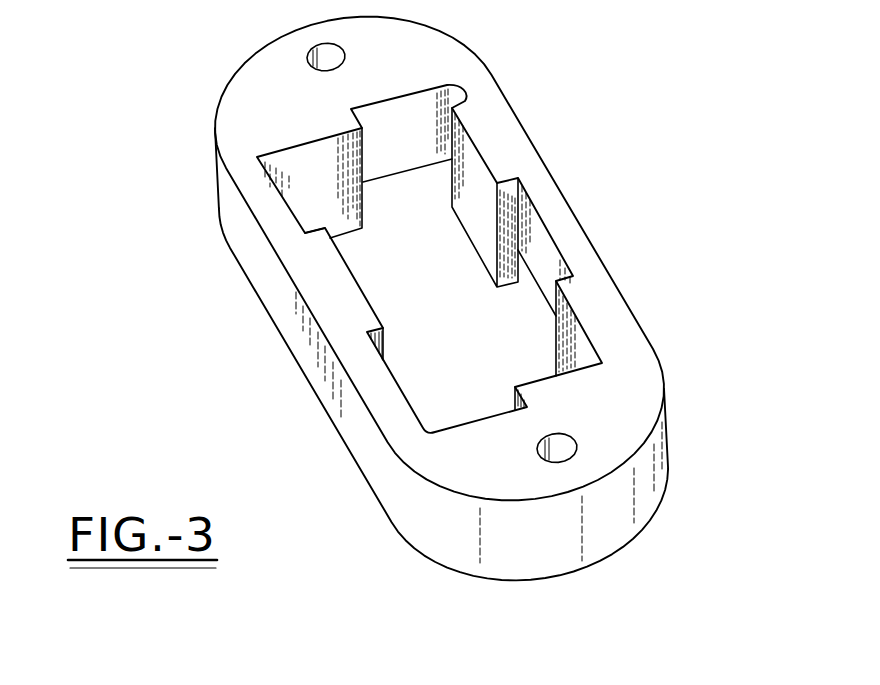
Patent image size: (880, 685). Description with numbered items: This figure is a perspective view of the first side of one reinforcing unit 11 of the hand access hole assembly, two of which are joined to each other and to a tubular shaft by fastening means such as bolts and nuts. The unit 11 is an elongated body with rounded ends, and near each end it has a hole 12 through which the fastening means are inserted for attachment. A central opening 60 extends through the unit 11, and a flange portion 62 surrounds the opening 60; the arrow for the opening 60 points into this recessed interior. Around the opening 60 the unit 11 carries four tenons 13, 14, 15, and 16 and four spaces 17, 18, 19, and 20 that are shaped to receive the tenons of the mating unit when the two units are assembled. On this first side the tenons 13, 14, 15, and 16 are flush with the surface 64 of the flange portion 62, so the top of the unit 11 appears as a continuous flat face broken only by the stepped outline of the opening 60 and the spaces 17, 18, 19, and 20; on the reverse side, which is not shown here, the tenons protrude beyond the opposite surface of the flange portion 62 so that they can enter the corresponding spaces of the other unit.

The reinforcing unit 11 is at (526, 87).
The holes 12 is at (316, 55).
The tenon 13 is at (368, 298).
The tenon 14 is at (300, 191).
The tenon 15 is at (468, 232).
The tenon 16 is at (538, 379).
The space 17 is at (537, 283).
The space 18 is at (405, 165).
The space 19 is at (328, 229).
The space 20 is at (475, 418).
The central opening 60 is at (370, 266).
The flange portion 62 is at (662, 470).
The surface 64 is at (630, 407).